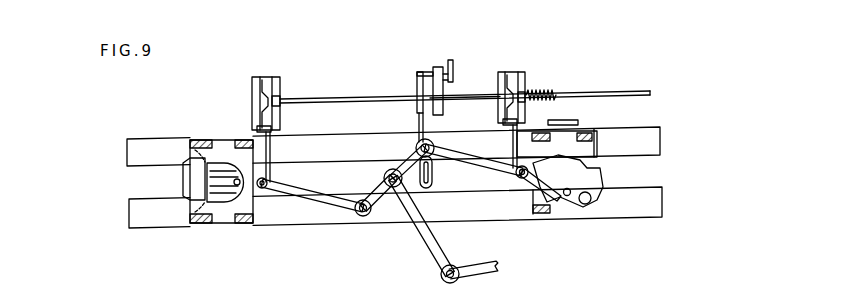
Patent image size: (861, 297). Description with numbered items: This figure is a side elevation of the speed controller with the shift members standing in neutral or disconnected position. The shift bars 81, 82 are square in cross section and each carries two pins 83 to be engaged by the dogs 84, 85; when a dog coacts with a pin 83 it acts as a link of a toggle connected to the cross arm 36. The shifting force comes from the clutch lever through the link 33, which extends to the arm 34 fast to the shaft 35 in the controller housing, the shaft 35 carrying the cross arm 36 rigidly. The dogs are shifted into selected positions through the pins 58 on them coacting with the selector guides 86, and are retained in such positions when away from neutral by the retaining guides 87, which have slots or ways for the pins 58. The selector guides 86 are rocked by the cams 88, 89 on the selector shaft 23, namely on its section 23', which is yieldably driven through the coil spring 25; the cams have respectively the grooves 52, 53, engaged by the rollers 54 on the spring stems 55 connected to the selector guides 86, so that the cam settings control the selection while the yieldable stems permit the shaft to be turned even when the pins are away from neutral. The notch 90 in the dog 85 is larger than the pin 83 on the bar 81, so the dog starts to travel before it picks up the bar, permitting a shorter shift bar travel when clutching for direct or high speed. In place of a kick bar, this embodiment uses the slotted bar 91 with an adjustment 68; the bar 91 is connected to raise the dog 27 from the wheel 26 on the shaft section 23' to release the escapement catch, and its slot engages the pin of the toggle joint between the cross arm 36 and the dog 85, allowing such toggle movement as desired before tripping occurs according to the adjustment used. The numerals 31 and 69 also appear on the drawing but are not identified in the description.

The selector shaft 23 is at (465, 81).
The selector shaft section 23' is at (468, 68).
The coil spring 25 is at (537, 90).
The wheel 26 is at (419, 73).
The dog 27 is at (437, 80).
The knob 31 is at (448, 63).
The link 33 is at (487, 267).
The arm 34 is at (423, 243).
The shaft 35 is at (394, 186).
The cross arm 36 is at (368, 214).
The annular groove 52 is at (268, 78).
The annular groove 53 is at (512, 70).
The roller 54 is at (278, 127).
The spring stem 55 is at (272, 148).
The pin 58 is at (233, 163).
The adjustment 68 is at (422, 105).
The plate 69 is at (573, 122).
The shift bar 81 is at (127, 141).
The shift bar 82 is at (130, 205).
The pin 83 is at (198, 152).
The dog 84 is at (308, 208).
The dog 85 is at (482, 166).
The selector guide 86 is at (550, 190).
The retaining guide 87 is at (193, 205).
The cam 88 is at (278, 81).
The cam 89 is at (522, 70).
The notch 90 is at (627, 158).
The slotted bar 91 is at (420, 140).